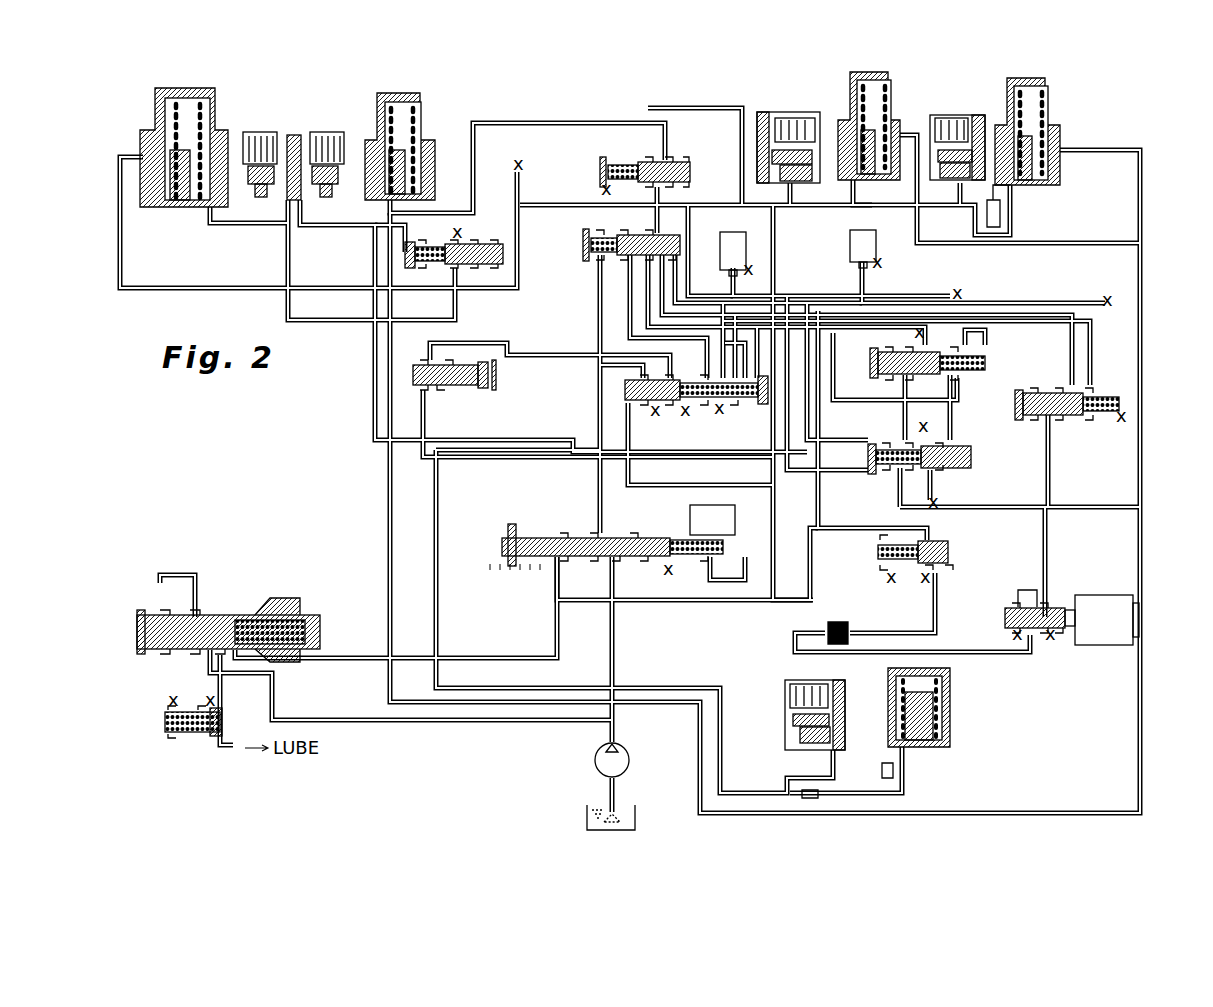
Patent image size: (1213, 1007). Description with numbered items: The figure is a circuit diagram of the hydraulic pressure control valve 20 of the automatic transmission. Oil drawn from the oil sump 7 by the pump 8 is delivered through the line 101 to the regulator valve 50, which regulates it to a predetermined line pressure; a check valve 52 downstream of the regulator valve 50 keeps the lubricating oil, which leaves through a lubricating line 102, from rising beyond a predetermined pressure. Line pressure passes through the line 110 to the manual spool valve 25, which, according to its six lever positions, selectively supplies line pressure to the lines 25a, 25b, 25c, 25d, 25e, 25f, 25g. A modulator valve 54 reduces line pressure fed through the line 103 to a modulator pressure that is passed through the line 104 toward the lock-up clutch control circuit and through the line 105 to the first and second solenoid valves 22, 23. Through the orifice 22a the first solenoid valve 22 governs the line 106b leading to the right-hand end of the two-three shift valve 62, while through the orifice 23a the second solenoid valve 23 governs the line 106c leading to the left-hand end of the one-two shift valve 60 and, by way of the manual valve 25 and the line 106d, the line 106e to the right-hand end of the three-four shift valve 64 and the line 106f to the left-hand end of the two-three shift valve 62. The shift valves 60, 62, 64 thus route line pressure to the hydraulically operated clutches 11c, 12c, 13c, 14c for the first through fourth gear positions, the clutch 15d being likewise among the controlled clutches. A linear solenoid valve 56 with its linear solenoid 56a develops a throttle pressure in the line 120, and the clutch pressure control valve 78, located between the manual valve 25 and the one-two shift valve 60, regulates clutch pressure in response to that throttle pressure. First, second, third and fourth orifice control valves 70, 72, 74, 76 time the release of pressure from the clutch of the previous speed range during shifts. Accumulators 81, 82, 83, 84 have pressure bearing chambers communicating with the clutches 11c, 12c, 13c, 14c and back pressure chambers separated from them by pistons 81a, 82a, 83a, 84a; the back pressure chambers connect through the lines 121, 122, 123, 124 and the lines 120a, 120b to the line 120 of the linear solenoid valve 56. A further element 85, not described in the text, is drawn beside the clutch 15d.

The hydraulic pressure control valve 20 is at (252, 421).
The accumulator 82 is at (225, 107).
The piston 82a is at (185, 210).
The hydraulic clutch 12c is at (258, 130).
The hydraulic clutch 14c is at (330, 128).
The accumulator 84 is at (428, 103).
The piston 84a is at (380, 204).
The 3-4 shift valve 64 is at (624, 148).
The 2-3 shift valve 62 is at (592, 275).
The line 106b is at (672, 258).
The first solenoid valve 22 is at (736, 230).
The orifice 22a is at (775, 295).
The line 106e is at (780, 207).
The hydraulic clutch 13c is at (792, 101).
The accumulator 83 is at (901, 91).
The piston 83a is at (862, 185).
The hydraulic clutch 11c is at (959, 107).
The accumulator 81 is at (1068, 110).
The piston 81a is at (1022, 195).
The line 121 is at (1096, 156).
The line 123 is at (1052, 242).
The second solenoid valve 23 is at (877, 240).
The orifice 23a is at (865, 297).
The line 124 is at (395, 248).
The fourth orifice control valve 76 is at (447, 282).
The line 122 is at (232, 288).
The clutch pressure control valve 78 is at (486, 398).
The line 106f is at (600, 352).
The 1-2 shift valve 60 is at (725, 410).
The line 106d is at (760, 330).
The third orifice control valve 74 is at (992, 355).
The first orifice control valve 70 is at (1077, 430).
The second orifice control valve 72 is at (984, 466).
The line 120a is at (1141, 412).
The line 120 is at (1096, 506).
The line 120b is at (1141, 655).
The line 106c is at (688, 485).
The manual spool valve 25 is at (626, 542).
The line 25a is at (585, 530).
The line 25b is at (688, 522).
The line 25c is at (712, 520).
The line 25d is at (580, 580).
The line 25e is at (614, 580).
The line 25f is at (655, 568).
The line 25g is at (720, 574).
The line 105 is at (820, 511).
The modulator valve 54 is at (958, 548).
The linear solenoid valve 56 is at (1072, 593).
The linear solenoid 56a is at (1090, 594).
The line 103 is at (872, 622).
The line 104 is at (732, 602).
The line 110 is at (617, 619).
The hydraulic clutch 15d is at (844, 676).
The accumulator 85 is at (952, 685).
The pump 8 is at (630, 755).
The oil sump 7 is at (636, 815).
The regulator valve 50 is at (243, 580).
The check valve 52 is at (191, 748).
The lubrication passage 102 is at (228, 757).
The line 101 is at (432, 728).